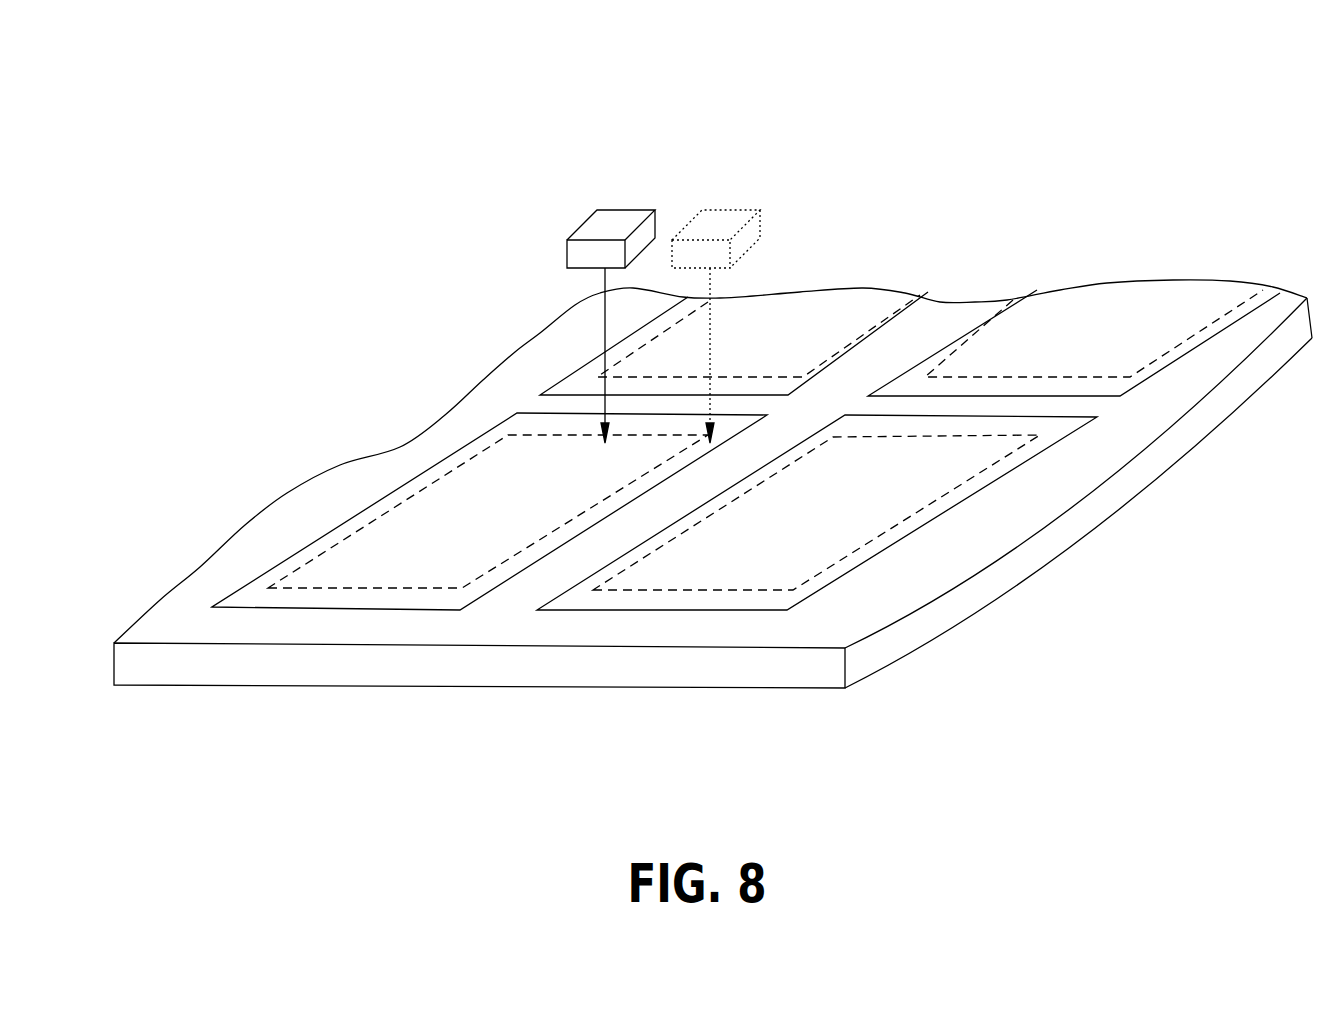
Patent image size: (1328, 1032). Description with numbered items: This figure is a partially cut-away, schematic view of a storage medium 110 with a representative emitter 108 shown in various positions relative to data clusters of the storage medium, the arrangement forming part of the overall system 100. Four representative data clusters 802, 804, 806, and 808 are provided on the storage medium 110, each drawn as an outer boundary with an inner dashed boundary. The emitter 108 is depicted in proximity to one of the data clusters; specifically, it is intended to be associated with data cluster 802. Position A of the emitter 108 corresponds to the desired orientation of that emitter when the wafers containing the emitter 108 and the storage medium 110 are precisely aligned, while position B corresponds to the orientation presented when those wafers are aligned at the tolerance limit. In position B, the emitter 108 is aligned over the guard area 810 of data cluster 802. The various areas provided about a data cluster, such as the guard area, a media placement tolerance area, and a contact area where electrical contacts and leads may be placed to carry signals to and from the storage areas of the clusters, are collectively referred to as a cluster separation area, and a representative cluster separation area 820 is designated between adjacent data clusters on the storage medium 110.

The system 100 is at (1190, 120).
The emitter 108 is at (607, 218).
The storage medium 110 is at (1160, 250).
The data cluster 802 is at (489, 511).
The data cluster 804 is at (817, 512).
The data cluster 806 is at (734, 343).
The data cluster 808 is at (1074, 343).
The guard area 810 is at (460, 458).
The cluster separation area 820 is at (943, 277).